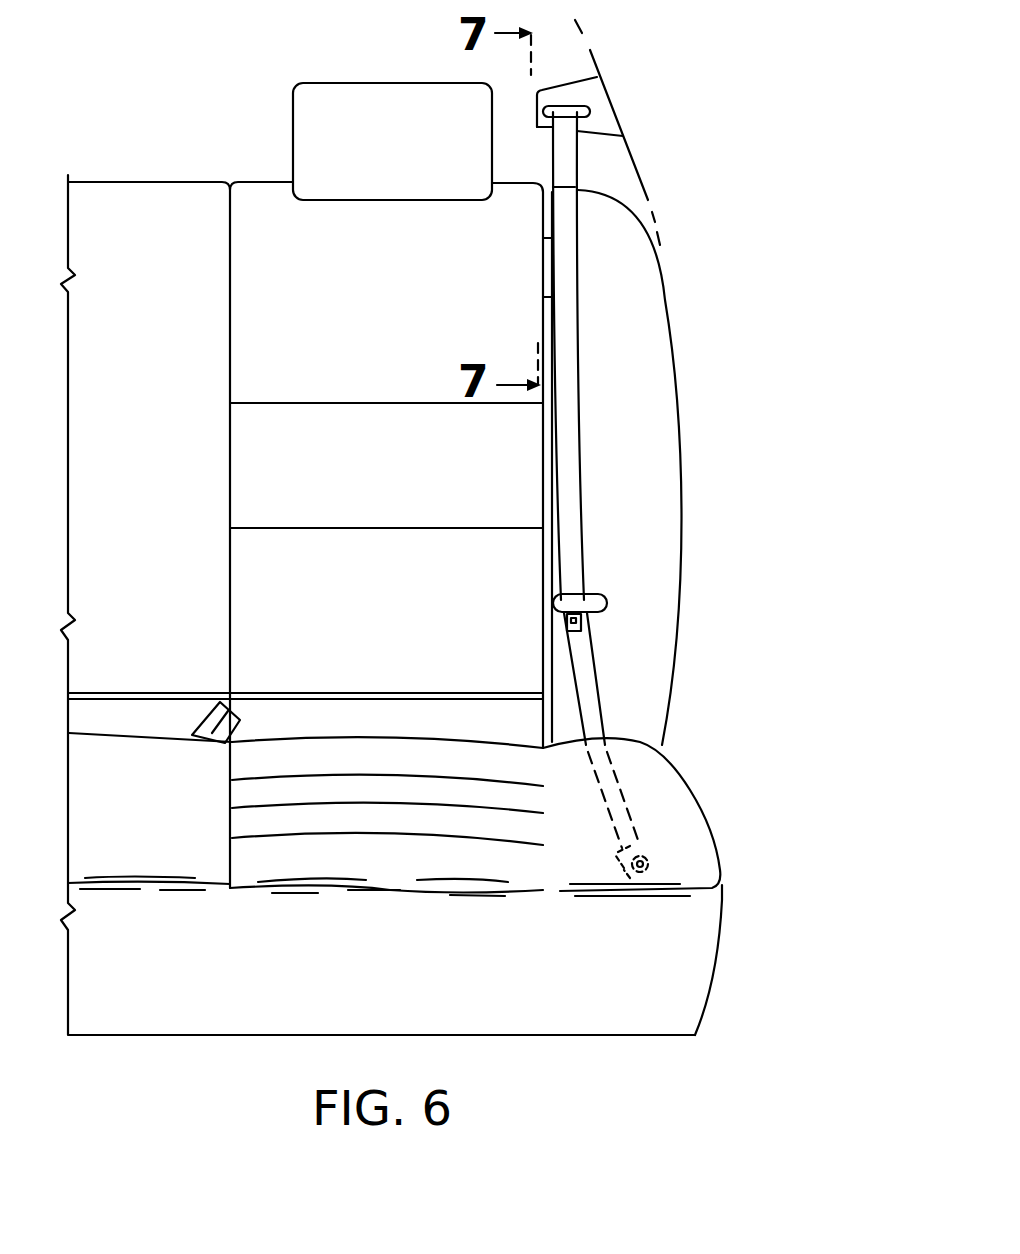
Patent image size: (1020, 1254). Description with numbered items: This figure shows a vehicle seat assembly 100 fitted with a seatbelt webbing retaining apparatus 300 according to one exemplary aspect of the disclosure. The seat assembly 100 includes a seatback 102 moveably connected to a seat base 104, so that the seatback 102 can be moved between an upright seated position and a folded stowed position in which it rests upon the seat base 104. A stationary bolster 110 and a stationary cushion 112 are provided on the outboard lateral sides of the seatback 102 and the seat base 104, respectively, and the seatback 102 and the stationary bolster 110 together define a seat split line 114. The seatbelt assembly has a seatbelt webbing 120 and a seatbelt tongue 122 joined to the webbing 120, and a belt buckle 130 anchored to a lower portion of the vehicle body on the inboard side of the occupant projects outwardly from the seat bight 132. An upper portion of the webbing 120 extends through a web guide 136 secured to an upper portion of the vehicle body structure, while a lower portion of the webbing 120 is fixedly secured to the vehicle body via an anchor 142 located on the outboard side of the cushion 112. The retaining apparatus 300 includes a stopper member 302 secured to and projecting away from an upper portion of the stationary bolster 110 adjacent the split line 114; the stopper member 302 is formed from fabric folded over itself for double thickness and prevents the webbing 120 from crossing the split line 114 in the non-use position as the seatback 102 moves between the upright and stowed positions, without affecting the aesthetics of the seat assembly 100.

The vehicle seat assembly 100 is at (454, 527).
The seatback 102 is at (358, 428).
The seat base 104 is at (378, 858).
The stationary bolster 110 is at (660, 490).
The stationary cushion 112 is at (666, 808).
The seat split line 114 is at (541, 482).
The seatbelt webbing 120 is at (583, 555).
The seatbelt latch or tongue 122 is at (603, 602).
The belt buckle 130 is at (206, 716).
The seat bight 132 is at (131, 735).
The web guide 136 is at (588, 95).
The anchor 142 is at (620, 868).
The seatbelt webbing retaining apparatus 300 is at (481, 467).
The stopper member 302 is at (543, 250).